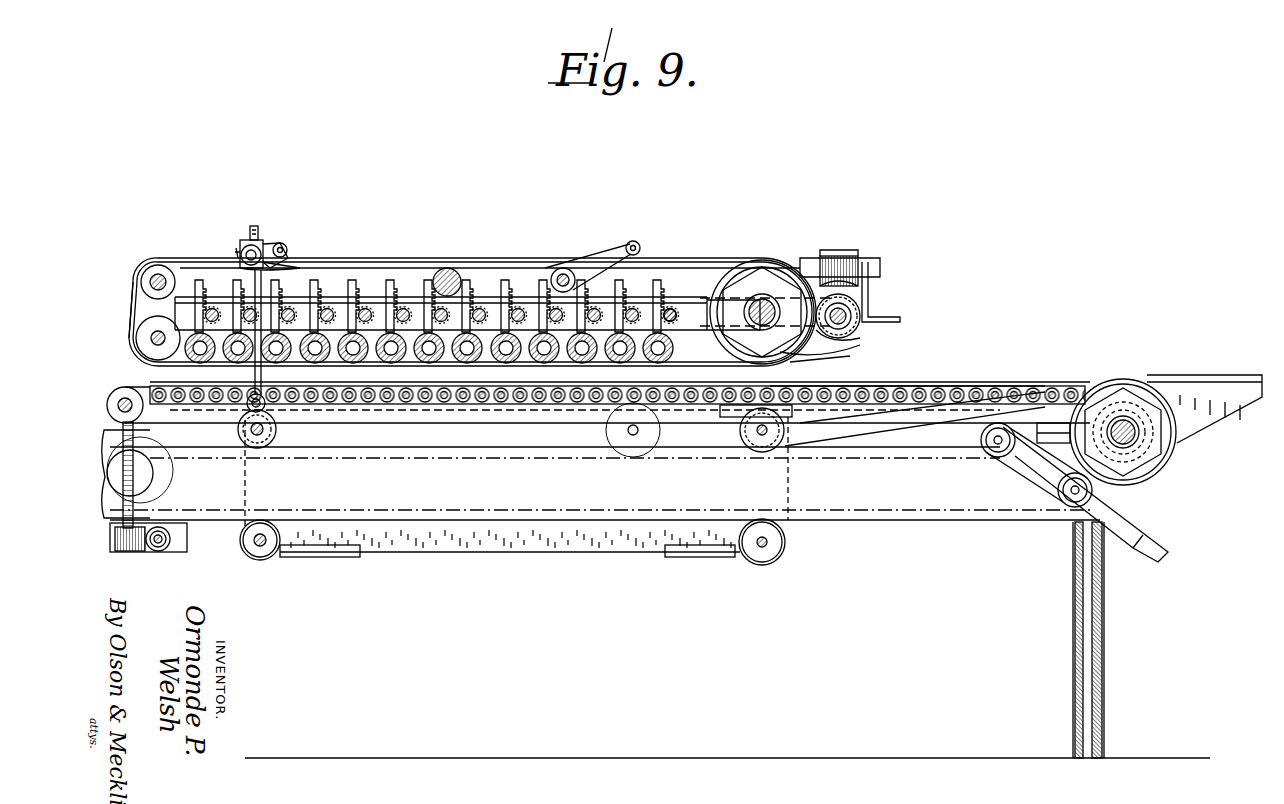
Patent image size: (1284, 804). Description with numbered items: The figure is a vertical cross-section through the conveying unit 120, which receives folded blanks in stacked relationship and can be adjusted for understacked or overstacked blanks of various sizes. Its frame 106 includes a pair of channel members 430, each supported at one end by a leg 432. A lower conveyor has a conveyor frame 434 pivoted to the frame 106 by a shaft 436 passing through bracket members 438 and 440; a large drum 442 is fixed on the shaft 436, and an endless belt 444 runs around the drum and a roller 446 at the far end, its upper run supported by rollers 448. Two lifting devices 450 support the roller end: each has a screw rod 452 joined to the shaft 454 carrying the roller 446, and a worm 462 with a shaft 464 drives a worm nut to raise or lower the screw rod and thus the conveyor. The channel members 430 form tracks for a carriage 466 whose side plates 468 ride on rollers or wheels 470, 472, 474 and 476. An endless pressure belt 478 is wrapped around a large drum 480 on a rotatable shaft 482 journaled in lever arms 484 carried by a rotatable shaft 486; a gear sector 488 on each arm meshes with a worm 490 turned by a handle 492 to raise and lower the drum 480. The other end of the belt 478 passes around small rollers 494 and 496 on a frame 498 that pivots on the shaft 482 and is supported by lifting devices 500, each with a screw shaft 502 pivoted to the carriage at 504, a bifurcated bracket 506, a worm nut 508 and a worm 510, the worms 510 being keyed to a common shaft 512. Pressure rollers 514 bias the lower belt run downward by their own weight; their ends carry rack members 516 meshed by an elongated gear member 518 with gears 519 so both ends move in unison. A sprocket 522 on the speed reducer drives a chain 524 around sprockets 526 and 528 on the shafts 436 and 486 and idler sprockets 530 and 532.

The frame 106 is at (898, 520).
The conveying unit 120 is at (489, 258).
The channel members 430 is at (972, 524).
The leg 432 is at (1104, 652).
The conveyor frame 434 is at (1001, 387).
The shaft 436 is at (1126, 424).
The bracket members 438 is at (1062, 424).
The bracket members 440 is at (1028, 472).
The large drum 442 is at (1162, 470).
The endless belt 444 is at (812, 385).
The roller 446 is at (126, 386).
The rollers 448 is at (481, 406).
The lifting devices 450 is at (132, 560).
The screw rod 452 is at (148, 462).
The shaft 454 is at (140, 412).
The worm 462 is at (152, 552).
The shaft 464 is at (162, 540).
The carriage 466 is at (375, 560).
The side plates 468 is at (612, 556).
The rollers or wheels 470 is at (272, 446).
The rollers or wheels 472 is at (762, 437).
The rollers or wheels 474 is at (266, 550).
The rollers or wheels 476 is at (766, 553).
The endless pressure belt 478 is at (686, 262).
The large drum 480 is at (774, 296).
The rotatable shaft 482 is at (798, 274).
The lever arms 484 is at (816, 354).
The rotatable shaft 486 is at (848, 318).
The gear sector 488 is at (878, 270).
The worm 490 is at (832, 282).
The handle 492 is at (882, 302).
The small roller 494 is at (152, 332).
The small roller 496 is at (150, 272).
The frame 498 is at (369, 286).
The lifting devices 500 is at (266, 244).
The screw shaft 502 is at (250, 238).
The pivotal connection 504 is at (246, 405).
The bifurcated bracket 506 is at (248, 250).
The worm nut 508 is at (236, 252).
The worm 510 is at (286, 247).
The common shaft 512 is at (284, 260).
The pressure rollers 514 is at (412, 290).
The rack members 516 is at (655, 276).
The elongated gear member 518 is at (673, 314).
The gears 519 is at (673, 321).
The sprocket 522 is at (150, 488).
The drive chain 524 is at (364, 508).
The sprocket 526 is at (1176, 456).
The sprocket 528 is at (838, 344).
The idler sprocket 530 is at (742, 438).
The idler sprocket 532 is at (633, 457).